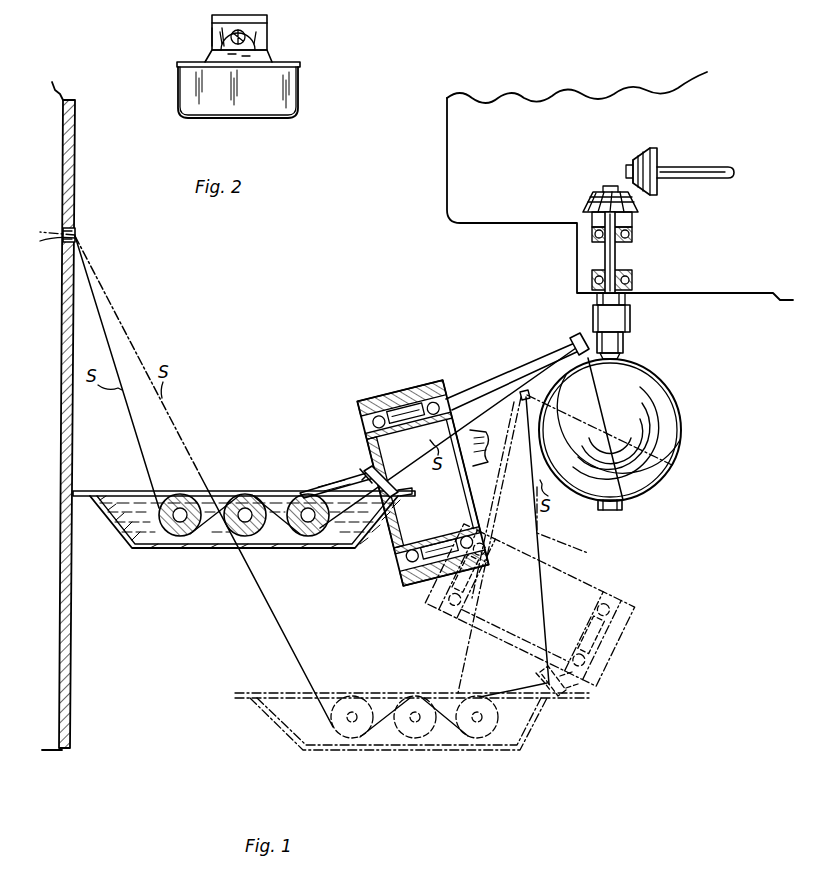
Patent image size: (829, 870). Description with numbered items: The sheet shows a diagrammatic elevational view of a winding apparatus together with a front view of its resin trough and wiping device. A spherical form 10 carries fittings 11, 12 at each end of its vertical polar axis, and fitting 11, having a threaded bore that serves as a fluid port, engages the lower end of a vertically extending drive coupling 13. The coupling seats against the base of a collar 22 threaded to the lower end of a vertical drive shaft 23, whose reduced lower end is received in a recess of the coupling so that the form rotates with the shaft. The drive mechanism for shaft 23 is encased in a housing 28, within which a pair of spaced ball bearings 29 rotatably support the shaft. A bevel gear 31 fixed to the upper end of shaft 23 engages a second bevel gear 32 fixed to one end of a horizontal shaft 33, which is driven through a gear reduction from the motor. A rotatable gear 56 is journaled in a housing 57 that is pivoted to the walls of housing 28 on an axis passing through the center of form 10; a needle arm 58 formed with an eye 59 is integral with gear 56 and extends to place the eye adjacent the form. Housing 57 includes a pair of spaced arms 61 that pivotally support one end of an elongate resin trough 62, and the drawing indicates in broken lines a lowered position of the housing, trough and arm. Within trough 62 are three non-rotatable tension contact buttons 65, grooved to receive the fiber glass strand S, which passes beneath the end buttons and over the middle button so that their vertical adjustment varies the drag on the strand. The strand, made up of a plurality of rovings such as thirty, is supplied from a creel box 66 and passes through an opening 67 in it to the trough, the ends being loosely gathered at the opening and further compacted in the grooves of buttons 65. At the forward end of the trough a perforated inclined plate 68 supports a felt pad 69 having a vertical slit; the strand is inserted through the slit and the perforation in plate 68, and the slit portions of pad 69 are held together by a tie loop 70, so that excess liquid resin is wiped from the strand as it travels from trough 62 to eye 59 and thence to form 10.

In FIG. 1, the spherical form 10 is at (682, 438).
In FIG. 1, the fitting 11 is at (624, 357).
In FIG. 1, the fitting 12 is at (624, 506).
In FIG. 1, the drive coupling 13 is at (625, 338).
In FIG. 1, the collar 22 is at (632, 316).
In FIG. 1, the vertical drive shaft 23 is at (617, 258).
In FIG. 1, the housing 28 is at (465, 223).
In FIG. 1, the ball bearings 29 is at (633, 238).
In FIG. 1, the bevel gear 31 is at (584, 198).
In FIG. 1, the second bevel gear 32 is at (630, 158).
In FIG. 1, the horizontal shaft 33 is at (690, 180).
In FIG. 1, the rotatable gear 56 is at (440, 381).
In FIG. 1, the housing 57 is at (392, 390).
In FIG. 1, the needle arm 58 is at (500, 373).
In FIG. 1, the eye 59 is at (572, 342).
In FIG. 1, the arms 61 is at (345, 478).
In FIG. 2, the resin trough 62 is at (290, 100).
In FIG. 1, the resin trough 62 is at (202, 552).
In FIG. 1, the tension contact buttons 65 is at (300, 496).
In FIG. 1, the creel box 66 is at (68, 590).
In FIG. 1, the opening 67 is at (78, 235).
In FIG. 2, the perforated inclined plate 68 is at (258, 38).
In FIG. 1, the perforated inclined plate 68 is at (386, 476).
In FIG. 2, the pad 69 is at (212, 38).
In FIG. 1, the pad 69 is at (362, 466).
In FIG. 2, the tie loop 70 is at (268, 23).